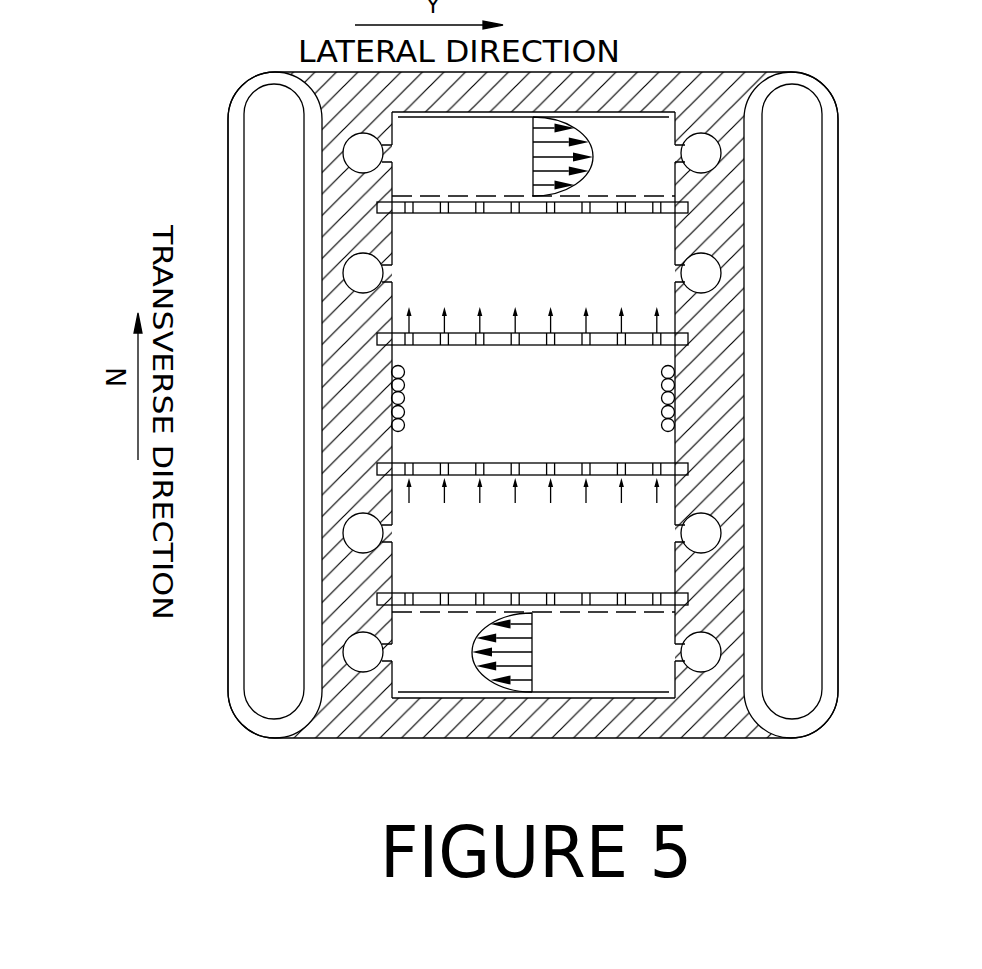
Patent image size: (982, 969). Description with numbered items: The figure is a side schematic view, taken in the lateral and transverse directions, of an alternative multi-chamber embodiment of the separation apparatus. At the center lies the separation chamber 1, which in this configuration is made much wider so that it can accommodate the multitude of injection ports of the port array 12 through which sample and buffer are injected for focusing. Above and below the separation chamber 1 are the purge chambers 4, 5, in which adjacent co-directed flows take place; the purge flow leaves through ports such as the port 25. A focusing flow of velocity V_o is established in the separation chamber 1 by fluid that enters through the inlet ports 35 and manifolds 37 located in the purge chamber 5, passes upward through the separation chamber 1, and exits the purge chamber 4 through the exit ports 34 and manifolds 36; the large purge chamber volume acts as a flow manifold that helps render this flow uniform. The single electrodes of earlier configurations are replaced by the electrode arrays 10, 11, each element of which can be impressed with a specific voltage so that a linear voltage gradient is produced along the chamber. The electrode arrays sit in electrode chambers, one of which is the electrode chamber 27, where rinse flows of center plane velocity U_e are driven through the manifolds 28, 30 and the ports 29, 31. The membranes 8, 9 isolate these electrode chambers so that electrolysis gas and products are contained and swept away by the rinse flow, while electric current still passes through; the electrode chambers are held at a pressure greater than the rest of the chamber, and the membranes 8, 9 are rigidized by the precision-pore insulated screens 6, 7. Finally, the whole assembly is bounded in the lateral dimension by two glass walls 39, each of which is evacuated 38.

The separation chamber 1 is at (543, 390).
The purge chamber 4 is at (453, 259).
The purge chamber 5 is at (451, 552).
The precision-pore insulated screen 6 is at (561, 216).
The precision-pore insulated screen 7 is at (498, 592).
The membrane 8 is at (605, 189).
The membrane 9 is at (612, 614).
The electrode array 10 is at (477, 122).
The electrode array 11 is at (572, 691).
The injection port array 12 is at (391, 392).
The port 25 is at (447, 159).
The electrode chamber 27 is at (552, 649).
The manifold 28 is at (532, 153).
The port 29 is at (389, 164).
The manifold 30 is at (532, 652).
The port 31 is at (389, 663).
The exit port 34 is at (389, 283).
The inlet port 35 is at (389, 544).
The manifold 36 is at (532, 273).
The manifold 37 is at (532, 533).
The evacuated space 38 is at (255, 367).
The glass wall 39 is at (228, 185).